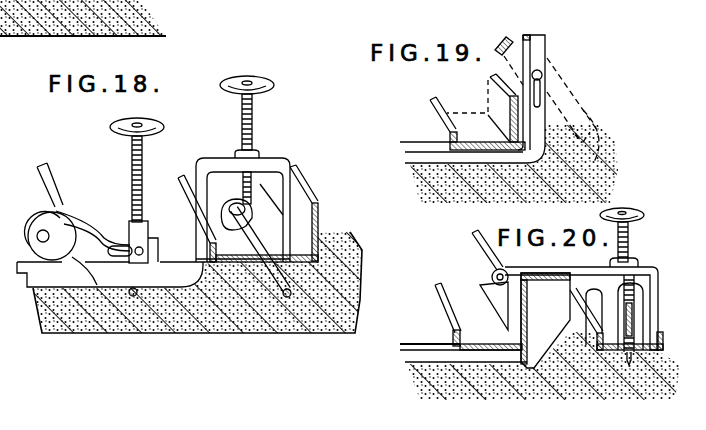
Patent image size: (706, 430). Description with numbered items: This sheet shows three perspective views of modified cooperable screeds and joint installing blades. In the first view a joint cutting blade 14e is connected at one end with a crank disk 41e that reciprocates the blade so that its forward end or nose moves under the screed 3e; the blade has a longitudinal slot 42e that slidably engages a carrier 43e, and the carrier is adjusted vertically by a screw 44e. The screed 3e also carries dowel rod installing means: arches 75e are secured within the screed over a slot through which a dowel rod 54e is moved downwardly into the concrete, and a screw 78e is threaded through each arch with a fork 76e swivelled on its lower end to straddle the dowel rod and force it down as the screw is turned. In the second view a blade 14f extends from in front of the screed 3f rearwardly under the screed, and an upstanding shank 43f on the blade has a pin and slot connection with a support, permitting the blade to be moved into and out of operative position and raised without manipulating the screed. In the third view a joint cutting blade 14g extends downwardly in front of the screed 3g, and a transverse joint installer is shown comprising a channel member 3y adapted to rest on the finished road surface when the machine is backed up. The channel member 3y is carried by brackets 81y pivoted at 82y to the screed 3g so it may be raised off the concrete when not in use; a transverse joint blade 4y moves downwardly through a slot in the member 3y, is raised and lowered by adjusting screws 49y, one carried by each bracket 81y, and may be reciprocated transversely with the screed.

In FIG. 18, the joint cutting blade 14e is at (189, 282).
In FIG. 18, the crank disk 41e is at (60, 214).
In FIG. 18, the longitudinal slot 42e is at (118, 247).
In FIG. 18, the carrier 43e is at (142, 233).
In FIG. 18, the screw 44e is at (131, 169).
In FIG. 18, the screw 78e is at (253, 130).
In FIG. 18, the arches 75e is at (286, 168).
In FIG. 18, the fork 76e is at (256, 220).
In FIG. 18, the screed 3e is at (303, 221).
In FIG. 18, the dowel rod 54e is at (262, 252).
In FIG. 19, the blade 14f is at (478, 152).
In FIG. 19, the upstanding shank 43f is at (535, 45).
In FIG. 19, the screed 3f is at (465, 124).
In FIG. 20, the joint cutting blade 14g is at (540, 336).
In FIG. 20, the screed 3g is at (453, 337).
In FIG. 20, the channel member 3y is at (663, 338).
In FIG. 20, the pivot 82y is at (492, 276).
In FIG. 20, the brackets 81y is at (652, 292).
In FIG. 20, the adjusting screws 49y is at (629, 240).
In FIG. 20, the transverse joint blade 4y is at (634, 331).